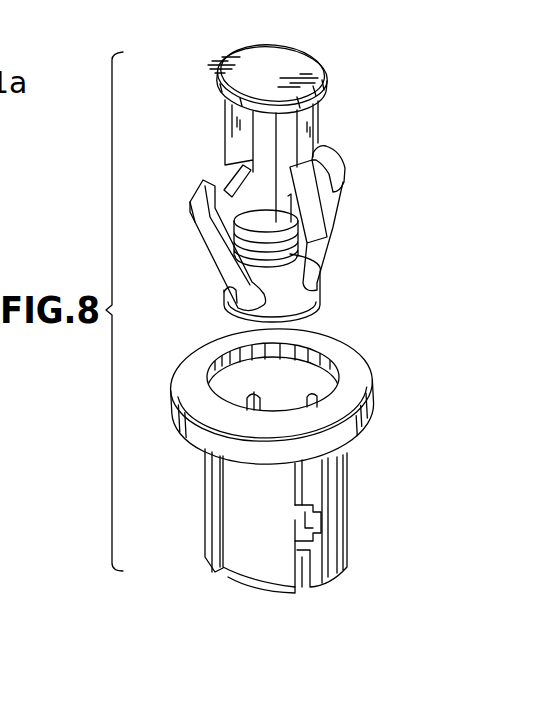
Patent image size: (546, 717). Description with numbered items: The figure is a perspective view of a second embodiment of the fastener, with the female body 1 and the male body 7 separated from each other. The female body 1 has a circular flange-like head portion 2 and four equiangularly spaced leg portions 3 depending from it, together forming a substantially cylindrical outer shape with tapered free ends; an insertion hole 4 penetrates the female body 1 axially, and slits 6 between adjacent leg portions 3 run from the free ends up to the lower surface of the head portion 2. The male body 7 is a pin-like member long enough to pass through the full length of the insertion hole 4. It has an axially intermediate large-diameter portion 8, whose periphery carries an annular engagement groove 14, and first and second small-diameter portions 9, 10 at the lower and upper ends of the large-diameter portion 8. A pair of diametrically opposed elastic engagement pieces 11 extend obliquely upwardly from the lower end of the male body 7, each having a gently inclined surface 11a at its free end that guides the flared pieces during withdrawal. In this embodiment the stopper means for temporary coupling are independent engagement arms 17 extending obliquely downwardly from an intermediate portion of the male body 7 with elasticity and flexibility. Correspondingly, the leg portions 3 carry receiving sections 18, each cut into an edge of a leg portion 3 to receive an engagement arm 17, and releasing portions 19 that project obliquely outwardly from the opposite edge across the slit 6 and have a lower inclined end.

The female body 1 is at (168, 410).
The head portion 2 is at (297, 396).
The leg portions 3 is at (281, 547).
The insertion hole 4 is at (303, 378).
The slits 6 is at (213, 486).
The male body 7 is at (317, 57).
The large-diameter portion 8 is at (250, 208).
The first small-diameter portion 9 is at (288, 283).
The second small-diameter portion 10 is at (268, 165).
The elastic engagement pieces 11 is at (214, 243).
The gently inclined surface 11a is at (338, 158).
The annular engagement groove 14 is at (262, 244).
The engagement arms 17 is at (293, 240).
The receiving sections 18 is at (318, 539).
The releasing portions 19 is at (296, 535).